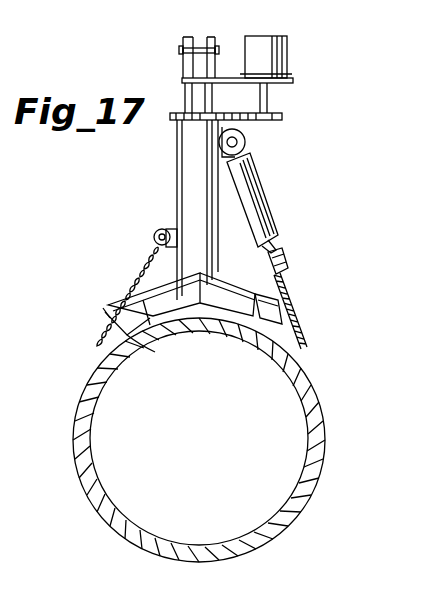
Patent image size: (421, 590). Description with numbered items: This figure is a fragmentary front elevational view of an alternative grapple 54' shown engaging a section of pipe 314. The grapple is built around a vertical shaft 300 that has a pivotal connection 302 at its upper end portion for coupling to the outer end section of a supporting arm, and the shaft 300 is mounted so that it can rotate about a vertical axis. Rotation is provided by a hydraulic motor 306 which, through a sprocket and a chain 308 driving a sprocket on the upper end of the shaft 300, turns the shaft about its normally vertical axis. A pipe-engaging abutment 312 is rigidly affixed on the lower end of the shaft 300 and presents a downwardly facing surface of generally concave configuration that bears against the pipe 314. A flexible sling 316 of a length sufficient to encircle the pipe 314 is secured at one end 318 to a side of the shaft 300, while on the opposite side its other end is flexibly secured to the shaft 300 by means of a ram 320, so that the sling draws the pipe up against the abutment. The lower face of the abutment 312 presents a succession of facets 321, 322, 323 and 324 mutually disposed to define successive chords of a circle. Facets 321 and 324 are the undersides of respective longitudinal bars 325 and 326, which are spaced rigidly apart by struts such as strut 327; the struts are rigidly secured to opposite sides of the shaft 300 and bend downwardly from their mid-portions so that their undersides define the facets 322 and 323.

The grapple 54' is at (379, 237).
The vertical shaft 300 is at (177, 177).
The pivotal connection 302 is at (185, 43).
The hydraulic motor 306 is at (287, 54).
The chain 308 is at (282, 118).
The pipe-engaging abutment 312 is at (152, 282).
The pipe 314 is at (292, 506).
The flexible sling 316 is at (312, 351).
The end of sling 318 is at (152, 245).
The ram 320 is at (268, 192).
The facet 321 is at (128, 338).
The facet 322 is at (170, 328).
The facet 323 is at (215, 327).
The facet 324 is at (262, 340).
The longitudinal bar 325 is at (107, 313).
The longitudinal bar 326 is at (281, 306).
The strut 327 is at (283, 270).